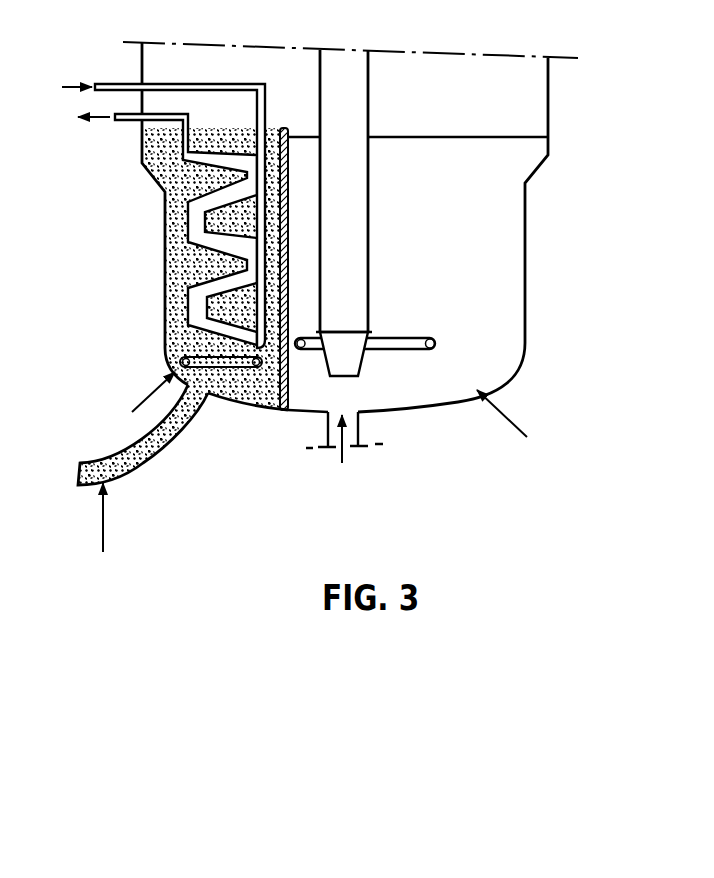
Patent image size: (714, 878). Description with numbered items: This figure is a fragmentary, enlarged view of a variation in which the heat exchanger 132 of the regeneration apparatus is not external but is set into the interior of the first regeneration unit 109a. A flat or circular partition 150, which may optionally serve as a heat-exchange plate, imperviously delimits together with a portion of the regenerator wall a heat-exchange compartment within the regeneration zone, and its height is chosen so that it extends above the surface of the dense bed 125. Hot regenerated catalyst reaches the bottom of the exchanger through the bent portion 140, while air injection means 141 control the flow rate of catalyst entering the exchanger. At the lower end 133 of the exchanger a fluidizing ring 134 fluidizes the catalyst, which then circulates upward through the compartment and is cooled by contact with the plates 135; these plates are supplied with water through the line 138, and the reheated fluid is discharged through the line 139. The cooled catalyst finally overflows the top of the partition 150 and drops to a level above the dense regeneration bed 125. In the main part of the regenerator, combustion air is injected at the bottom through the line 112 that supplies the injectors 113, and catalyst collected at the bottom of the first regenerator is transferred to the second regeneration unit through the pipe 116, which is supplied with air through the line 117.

The pipe 116 is at (347, 65).
The dense bed 125 is at (503, 137).
The first regeneration unit 109a is at (473, 275).
The injectors 113 is at (432, 340).
The line 112 is at (507, 415).
The line 117 is at (342, 467).
The partition 150 is at (288, 128).
The line 138 is at (120, 83).
The line 139 is at (127, 122).
The plates 135 is at (197, 223).
The heat exchanger 132 is at (152, 234).
The fluidizing ring 134 is at (178, 354).
The lower end 133 is at (248, 392).
The bent portion 140 is at (193, 418).
The air injection means 141 is at (103, 525).